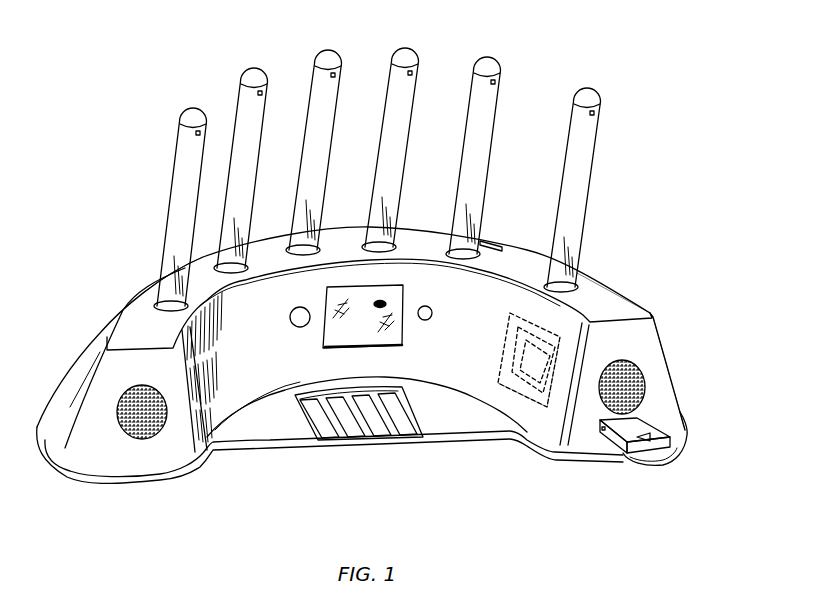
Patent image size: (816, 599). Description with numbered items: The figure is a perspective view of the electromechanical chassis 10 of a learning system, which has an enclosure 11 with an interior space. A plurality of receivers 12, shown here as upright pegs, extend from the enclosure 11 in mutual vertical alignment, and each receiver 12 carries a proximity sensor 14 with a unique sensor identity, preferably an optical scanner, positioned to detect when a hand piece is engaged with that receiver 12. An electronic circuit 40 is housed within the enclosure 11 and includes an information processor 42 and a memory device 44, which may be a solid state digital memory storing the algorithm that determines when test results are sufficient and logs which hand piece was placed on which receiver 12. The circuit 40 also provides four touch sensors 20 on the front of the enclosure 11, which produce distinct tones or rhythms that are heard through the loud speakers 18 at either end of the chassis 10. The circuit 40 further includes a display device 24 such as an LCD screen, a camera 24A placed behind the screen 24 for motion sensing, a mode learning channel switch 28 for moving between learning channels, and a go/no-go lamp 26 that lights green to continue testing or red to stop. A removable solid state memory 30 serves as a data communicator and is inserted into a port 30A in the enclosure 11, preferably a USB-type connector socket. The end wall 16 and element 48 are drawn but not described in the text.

The electromechanical chassis 10 is at (115, 57).
The enclosure 11 is at (100, 330).
The receiver 12 is at (191, 105).
The proximity sensor 14 is at (196, 132).
The end wall 16 is at (660, 333).
The speaker 18 is at (117, 403).
The touch sensor 20 is at (321, 440).
The display device 24 is at (340, 338).
The camera 24A is at (394, 305).
The go/no-go lamp 26 is at (431, 319).
The mode learning channel switch 28 is at (290, 323).
The removable solid state memory 30 is at (675, 462).
The port 30A is at (637, 418).
The electronic circuit 40 is at (523, 307).
The information processor 42 is at (523, 380).
The memory device 44 is at (533, 378).
The sensor 48 is at (560, 312).